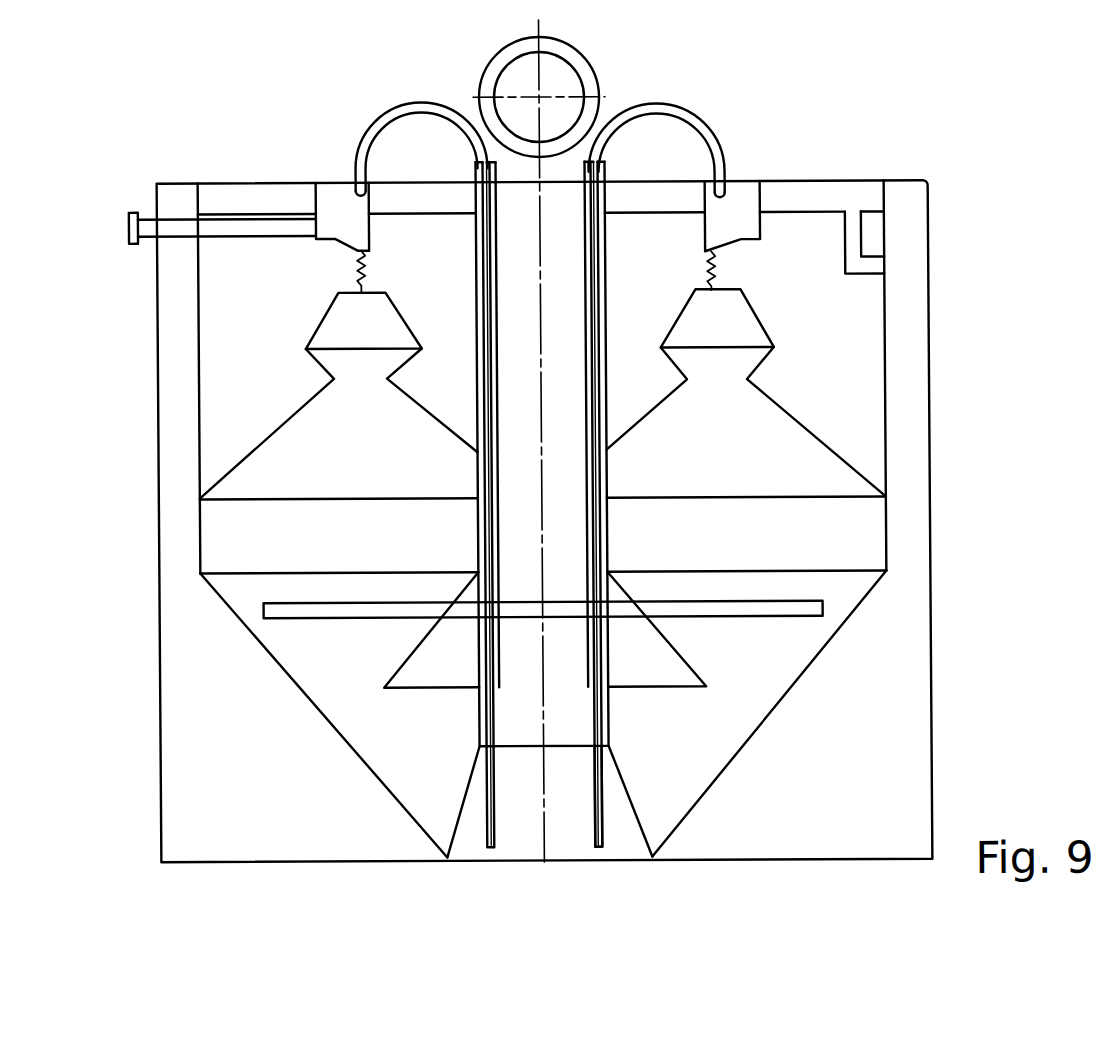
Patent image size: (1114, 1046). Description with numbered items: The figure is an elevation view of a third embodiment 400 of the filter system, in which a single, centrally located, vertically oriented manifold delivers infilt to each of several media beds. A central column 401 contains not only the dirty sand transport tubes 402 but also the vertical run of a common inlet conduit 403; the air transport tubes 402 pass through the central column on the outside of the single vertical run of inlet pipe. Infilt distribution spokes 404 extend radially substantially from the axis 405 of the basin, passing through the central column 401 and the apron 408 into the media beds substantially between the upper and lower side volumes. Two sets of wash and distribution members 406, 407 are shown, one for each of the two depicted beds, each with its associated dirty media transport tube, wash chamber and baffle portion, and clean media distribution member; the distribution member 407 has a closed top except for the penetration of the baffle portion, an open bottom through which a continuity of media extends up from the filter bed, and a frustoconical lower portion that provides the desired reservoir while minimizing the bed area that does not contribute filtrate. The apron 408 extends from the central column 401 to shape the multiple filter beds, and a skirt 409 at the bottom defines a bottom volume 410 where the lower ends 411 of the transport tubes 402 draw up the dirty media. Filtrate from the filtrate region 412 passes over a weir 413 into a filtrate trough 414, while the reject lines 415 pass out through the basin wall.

The third embodiment 400 is at (154, 131).
The central column 401 is at (607, 407).
The dirty sand transport tubes 402 is at (587, 153).
The common inlet conduit 403 is at (487, 160).
The infilt distribution spokes 404 is at (767, 603).
The axis 405 is at (542, 31).
The wash member 406 is at (763, 203).
The distribution member 407 is at (770, 332).
The apron 408 is at (633, 595).
The skirt 409 is at (623, 787).
The bottom volume 410 is at (620, 818).
The lower ends 411 is at (603, 843).
The filtrate region 412 is at (848, 402).
The weir 413 is at (858, 227).
The filtrate trough 414 is at (875, 243).
The reject lines 415 is at (292, 215).